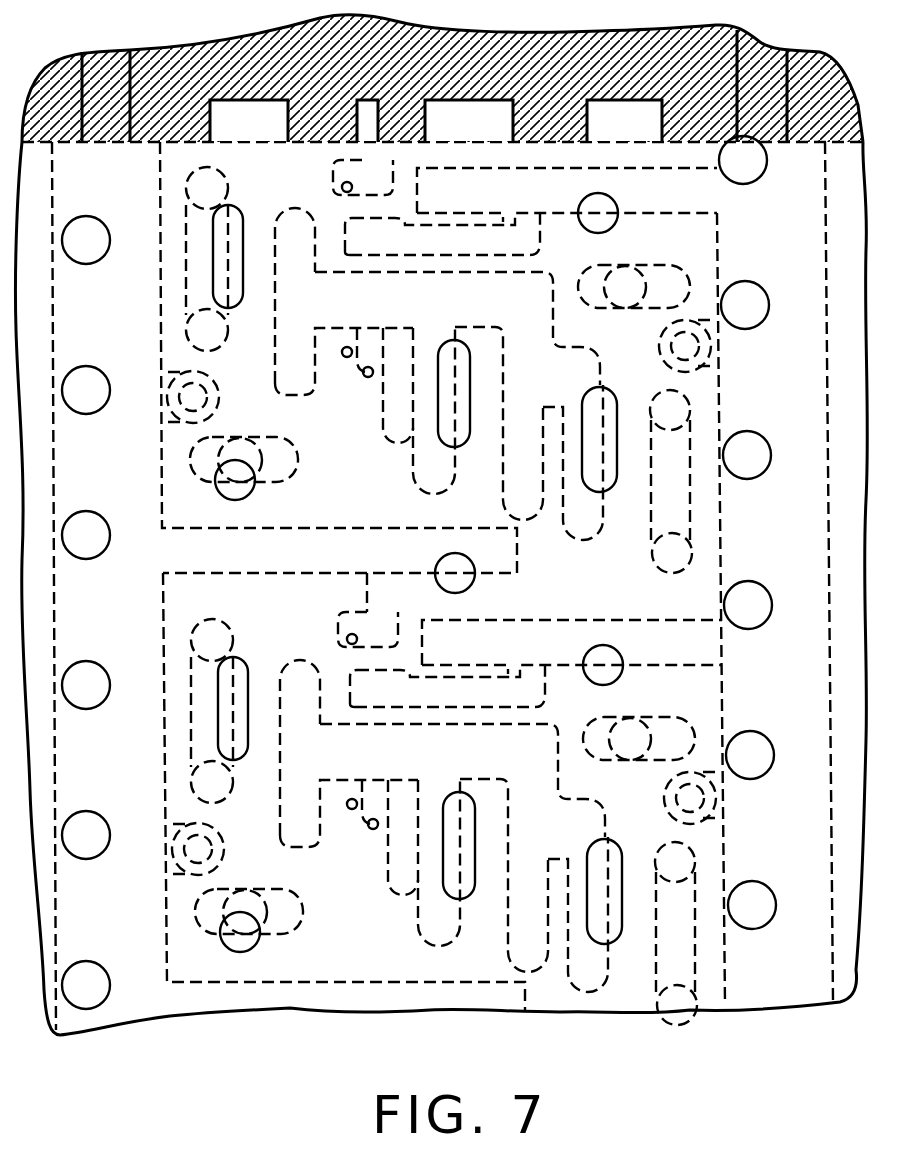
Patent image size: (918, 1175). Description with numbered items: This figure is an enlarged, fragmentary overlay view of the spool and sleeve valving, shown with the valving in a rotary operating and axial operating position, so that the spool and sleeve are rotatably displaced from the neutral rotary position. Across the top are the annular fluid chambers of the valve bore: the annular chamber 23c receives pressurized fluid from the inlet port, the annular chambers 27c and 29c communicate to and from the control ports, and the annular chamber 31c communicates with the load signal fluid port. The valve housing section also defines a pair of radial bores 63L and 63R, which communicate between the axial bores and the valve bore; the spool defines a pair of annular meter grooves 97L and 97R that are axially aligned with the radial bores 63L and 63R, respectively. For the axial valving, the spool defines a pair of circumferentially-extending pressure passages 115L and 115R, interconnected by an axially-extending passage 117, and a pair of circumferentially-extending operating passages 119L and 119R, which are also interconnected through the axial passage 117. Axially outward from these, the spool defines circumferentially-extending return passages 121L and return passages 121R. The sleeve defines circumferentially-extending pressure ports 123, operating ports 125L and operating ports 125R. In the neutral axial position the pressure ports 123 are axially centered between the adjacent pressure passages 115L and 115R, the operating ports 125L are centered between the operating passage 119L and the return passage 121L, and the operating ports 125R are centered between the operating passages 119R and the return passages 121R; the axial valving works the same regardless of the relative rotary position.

The radial bore 63L is at (116, 80).
The radial bore 63R is at (767, 62).
The annular chamber 29c is at (285, 70).
The annular chamber 31c is at (367, 110).
The annular chamber 23c is at (446, 110).
The annular chamber 27c is at (623, 107).
The annular meter groove 97L is at (143, 448).
The annular meter groove 97R is at (822, 677).
The axially-extending passage 117 is at (455, 298).
The operating passage 119L is at (300, 205).
The operating passage 119R is at (575, 532).
The return passage 121L is at (197, 263).
The return passage 121R is at (683, 510).
The pressure port 123 is at (460, 387).
The operating port 125L is at (237, 297).
The operating port 125R is at (608, 398).
The pressure passage 115L is at (410, 470).
The pressure passage 115R is at (510, 488).